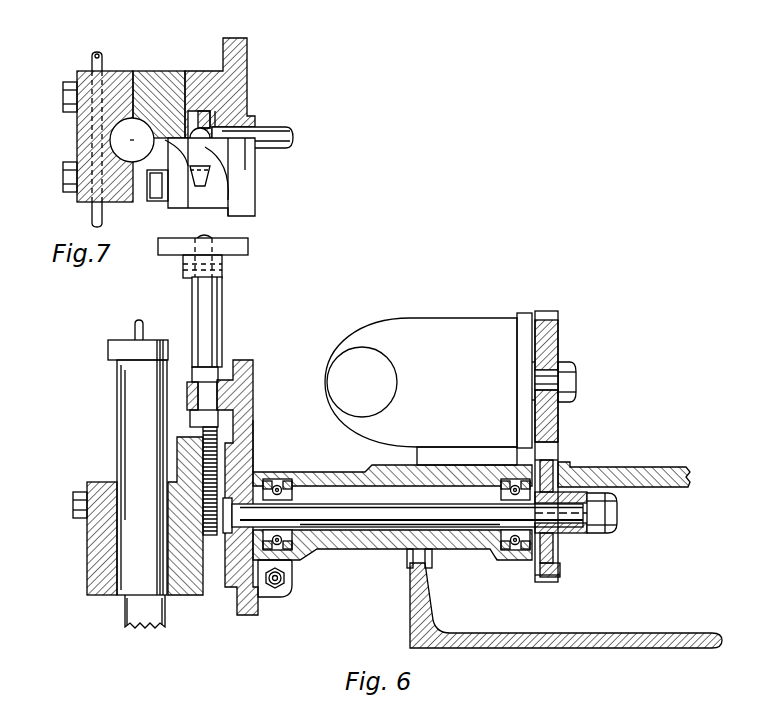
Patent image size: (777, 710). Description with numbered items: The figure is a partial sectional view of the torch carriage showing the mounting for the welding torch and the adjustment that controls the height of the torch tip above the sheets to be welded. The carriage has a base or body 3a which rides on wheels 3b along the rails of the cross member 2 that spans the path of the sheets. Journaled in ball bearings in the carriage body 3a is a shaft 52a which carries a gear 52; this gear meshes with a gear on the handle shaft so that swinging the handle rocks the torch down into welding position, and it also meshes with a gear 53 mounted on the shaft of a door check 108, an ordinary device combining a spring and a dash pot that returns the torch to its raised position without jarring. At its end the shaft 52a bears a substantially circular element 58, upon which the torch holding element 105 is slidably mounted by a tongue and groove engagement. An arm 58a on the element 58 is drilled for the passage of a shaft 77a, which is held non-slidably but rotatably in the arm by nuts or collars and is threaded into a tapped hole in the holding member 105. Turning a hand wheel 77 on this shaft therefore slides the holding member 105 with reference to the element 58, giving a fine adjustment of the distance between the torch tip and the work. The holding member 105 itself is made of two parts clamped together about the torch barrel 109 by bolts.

In FIG. 6, the cross member 2 is at (428, 603).
In FIG. 6, the carriage base or body 3a is at (623, 466).
In FIG. 6, the wheels 3b is at (433, 554).
In FIG. 6, the gear 52 is at (560, 568).
In FIG. 7, the shaft 52a is at (278, 131).
In FIG. 6, the shaft 52a is at (403, 515).
In FIG. 6, the gear 53 is at (560, 327).
In FIG. 7, the substantially circular element 58 is at (243, 72).
In FIG. 6, the substantially circular element 58 is at (254, 428).
In FIG. 6, the arm 58a is at (233, 362).
In FIG. 7, the hand wheel 77 is at (212, 152).
In FIG. 7, the shaft 77a is at (204, 129).
In FIG. 6, the shaft 77a is at (205, 302).
In FIG. 7, the torch holding element 105 is at (152, 73).
In FIG. 6, the torch holding element 105 is at (186, 590).
In FIG. 6, the door check 108 is at (430, 389).
In FIG. 7, the torch barrel 109 is at (113, 68).
In FIG. 6, the torch barrel 109 is at (138, 474).